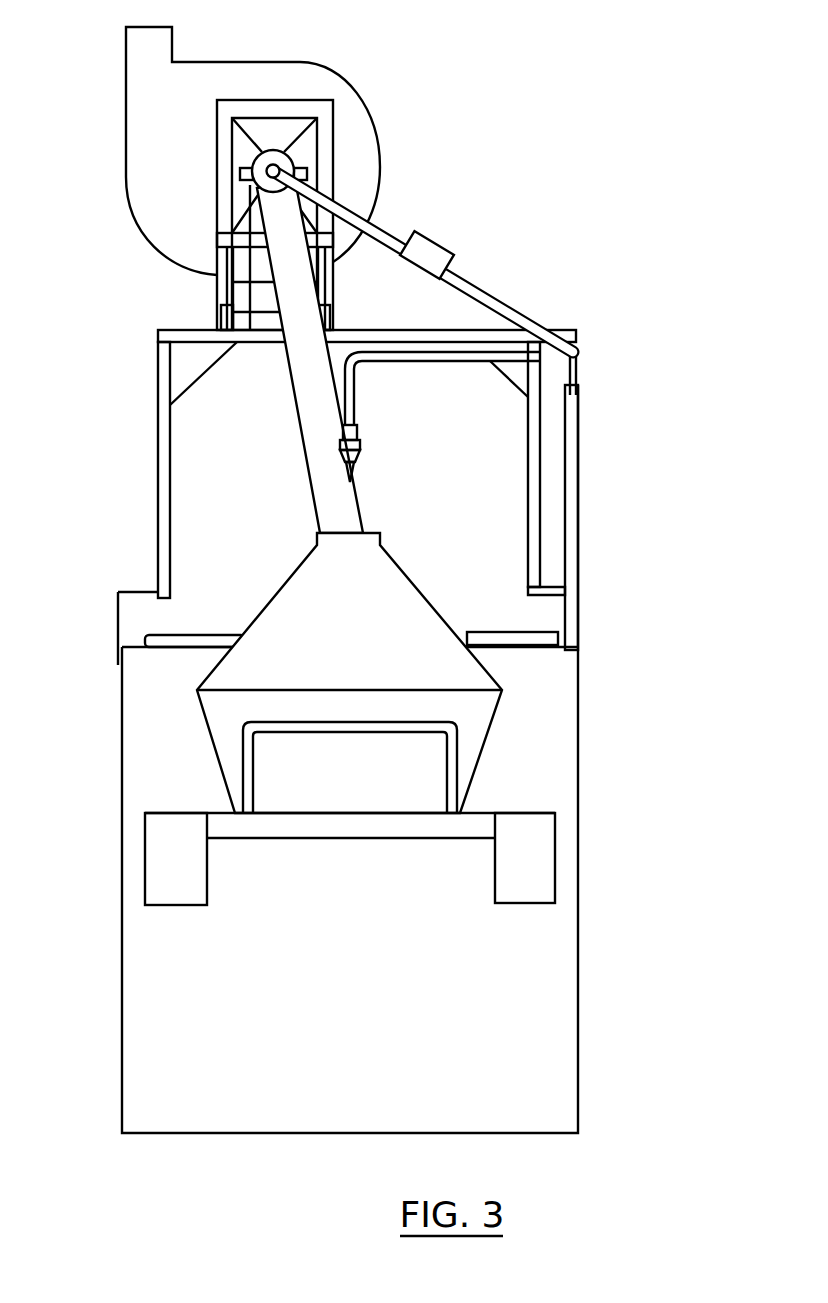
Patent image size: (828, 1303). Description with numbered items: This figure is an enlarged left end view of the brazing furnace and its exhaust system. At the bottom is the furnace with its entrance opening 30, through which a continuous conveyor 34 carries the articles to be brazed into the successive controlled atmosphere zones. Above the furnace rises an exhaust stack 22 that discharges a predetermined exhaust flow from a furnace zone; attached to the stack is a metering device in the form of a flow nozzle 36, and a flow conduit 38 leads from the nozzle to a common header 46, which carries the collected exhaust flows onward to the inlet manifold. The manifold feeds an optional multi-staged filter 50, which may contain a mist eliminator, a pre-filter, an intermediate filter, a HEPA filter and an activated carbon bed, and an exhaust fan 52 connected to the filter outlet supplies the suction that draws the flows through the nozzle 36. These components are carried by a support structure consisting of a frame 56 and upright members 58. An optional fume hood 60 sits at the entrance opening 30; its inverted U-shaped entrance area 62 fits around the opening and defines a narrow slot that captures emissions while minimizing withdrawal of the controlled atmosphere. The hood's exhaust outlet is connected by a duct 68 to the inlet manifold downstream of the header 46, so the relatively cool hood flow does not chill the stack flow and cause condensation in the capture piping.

The exhaust stack 22 is at (358, 483).
The entrance opening 30 is at (323, 782).
The continuous conveyor 34 is at (402, 810).
The flow nozzle 36 is at (358, 450).
The flow conduit 38 is at (421, 363).
The common header 46 is at (508, 305).
The multi-staged filter 50 is at (333, 158).
The exhaust fan 52 is at (143, 125).
The frame 56 is at (178, 328).
The upright members 58 is at (158, 443).
The fume hood 60 is at (472, 718).
The entrance area 62 is at (256, 794).
The duct 68 is at (315, 440).